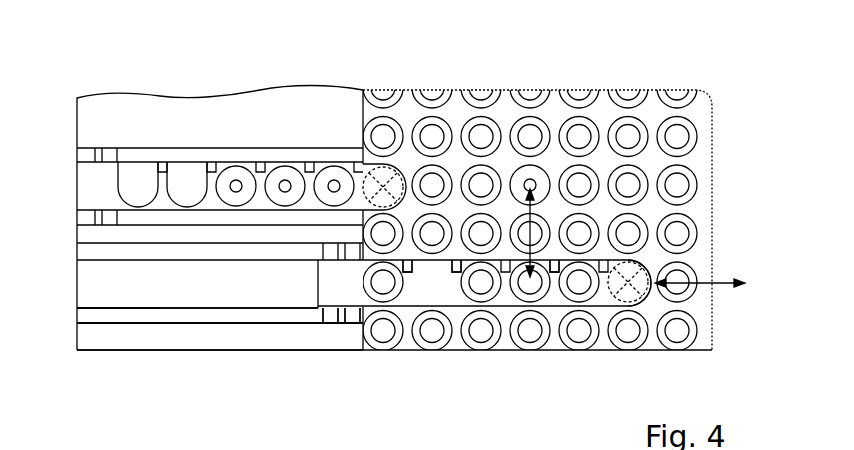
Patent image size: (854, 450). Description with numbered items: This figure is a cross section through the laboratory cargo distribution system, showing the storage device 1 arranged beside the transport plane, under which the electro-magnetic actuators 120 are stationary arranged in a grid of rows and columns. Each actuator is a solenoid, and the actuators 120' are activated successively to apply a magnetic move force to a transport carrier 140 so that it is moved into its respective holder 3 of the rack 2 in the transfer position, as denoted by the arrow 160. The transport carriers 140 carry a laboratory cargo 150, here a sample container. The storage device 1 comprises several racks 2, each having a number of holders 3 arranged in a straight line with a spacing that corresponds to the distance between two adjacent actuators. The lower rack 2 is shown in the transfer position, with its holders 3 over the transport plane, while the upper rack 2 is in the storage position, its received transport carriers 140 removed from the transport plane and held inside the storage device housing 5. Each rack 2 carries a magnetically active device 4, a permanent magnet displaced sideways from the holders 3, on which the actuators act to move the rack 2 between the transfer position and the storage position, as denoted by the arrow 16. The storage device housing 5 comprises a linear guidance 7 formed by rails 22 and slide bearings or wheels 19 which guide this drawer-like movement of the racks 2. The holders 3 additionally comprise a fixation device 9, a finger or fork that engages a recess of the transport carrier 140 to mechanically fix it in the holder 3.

The storage device 1 is at (76, 282).
The rack 2 is at (183, 172).
The holder 3 is at (145, 180).
The magnetically active device 4 is at (383, 182).
The storage device housing 5 is at (173, 333).
The linear guidance 7 is at (328, 323).
The fixation device 9 is at (410, 270).
The arrow 16 is at (707, 288).
The slide bearings or wheels 19 is at (357, 325).
The rails 22 is at (115, 315).
The electro-magnetic actuator 120 is at (677, 93).
The electro-magnetic actuator 120' is at (560, 307).
The transport carrier 140 is at (332, 176).
The laboratory cargo 150 is at (537, 178).
The arrow 160 is at (555, 262).